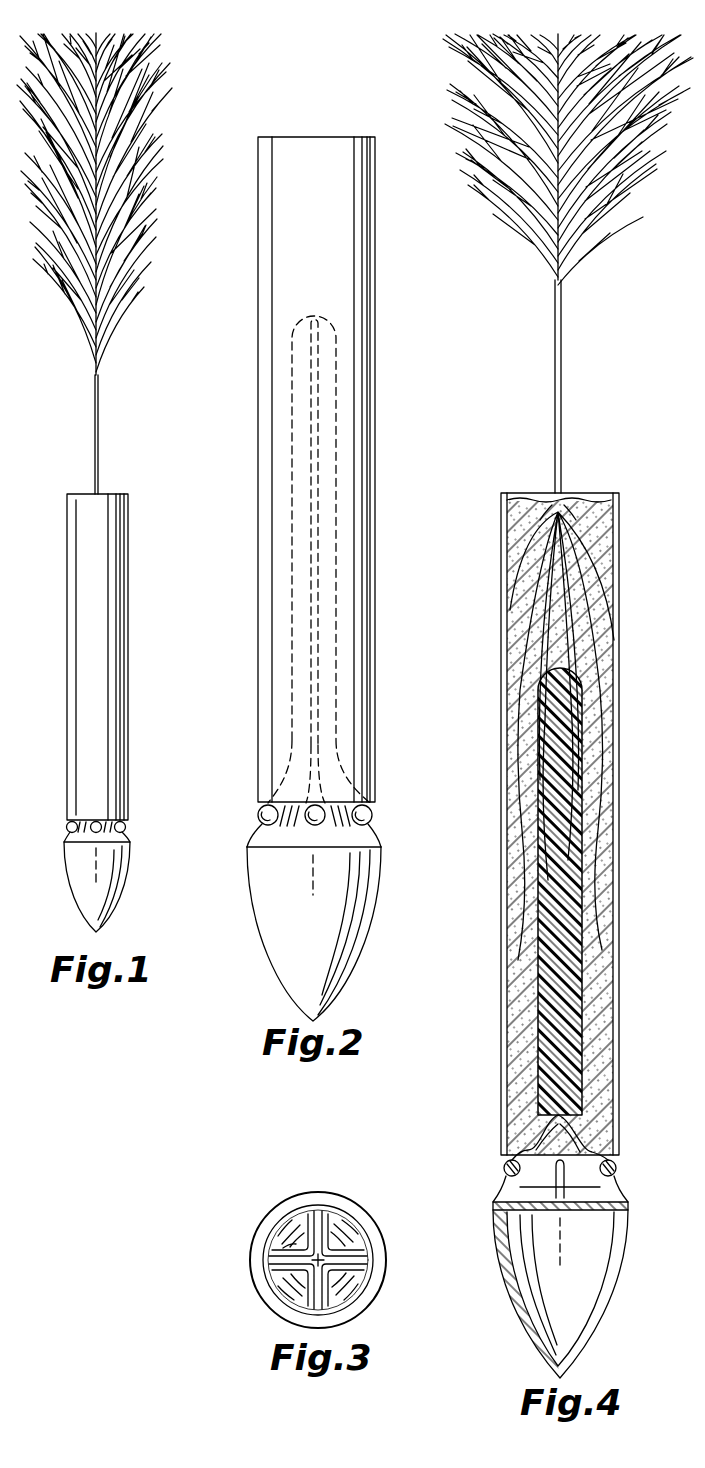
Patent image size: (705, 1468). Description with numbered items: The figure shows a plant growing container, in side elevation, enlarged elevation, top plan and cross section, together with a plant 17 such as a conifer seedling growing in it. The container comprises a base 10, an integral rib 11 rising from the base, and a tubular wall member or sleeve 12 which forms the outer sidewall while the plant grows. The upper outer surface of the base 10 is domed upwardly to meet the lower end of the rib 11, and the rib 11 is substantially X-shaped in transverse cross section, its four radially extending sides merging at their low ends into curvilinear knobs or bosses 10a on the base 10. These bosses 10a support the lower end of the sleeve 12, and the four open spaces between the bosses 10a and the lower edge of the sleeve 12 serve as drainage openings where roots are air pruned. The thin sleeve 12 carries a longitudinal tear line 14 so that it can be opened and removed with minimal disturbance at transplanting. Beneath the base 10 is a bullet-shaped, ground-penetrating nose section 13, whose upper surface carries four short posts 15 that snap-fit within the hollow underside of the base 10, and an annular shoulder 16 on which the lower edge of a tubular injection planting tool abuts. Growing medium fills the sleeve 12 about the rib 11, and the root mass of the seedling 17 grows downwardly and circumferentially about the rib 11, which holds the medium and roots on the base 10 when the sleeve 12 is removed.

In FIG. 1, the base 10 is at (66, 830).
In FIG. 2, the base 10 is at (256, 816).
In FIG. 3, the base 10 is at (284, 1244).
In FIG. 4, the base 10 is at (598, 1140).
In FIG. 1, the knobs or bosses 10a is at (125, 828).
In FIG. 2, the knobs or bosses 10a is at (372, 808).
In FIG. 3, the knobs or bosses 10a is at (306, 1207).
In FIG. 4, the knobs or bosses 10a is at (505, 1174).
In FIG. 2, the rib 11 is at (290, 404).
In FIG. 3, the rib 11 is at (312, 1242).
In FIG. 4, the rib 11 is at (588, 733).
In FIG. 1, the tubular wall member (sleeve) 12 is at (131, 592).
In FIG. 2, the tubular wall member (sleeve) 12 is at (378, 300).
In FIG. 3, the tubular wall member (sleeve) 12 is at (366, 1218).
In FIG. 4, the tubular wall member (sleeve) 12 is at (499, 1002).
In FIG. 1, the nose section 13 is at (72, 906).
In FIG. 2, the nose section 13 is at (262, 953).
In FIG. 3, the nose section 13 is at (362, 1203).
In FIG. 4, the nose section 13 is at (503, 1288).
In FIG. 1, the tear line 14 is at (75, 570).
In FIG. 2, the tear line 14 is at (270, 234).
In FIG. 4, the short posts 15 is at (580, 1200).
In FIG. 2, the annular shoulder 16 is at (381, 846).
In FIG. 4, the annular shoulder 16 is at (628, 1203).
In FIG. 1, the plant (seedling) 17 is at (90, 409).
In FIG. 4, the plant (seedling) 17 is at (549, 357).